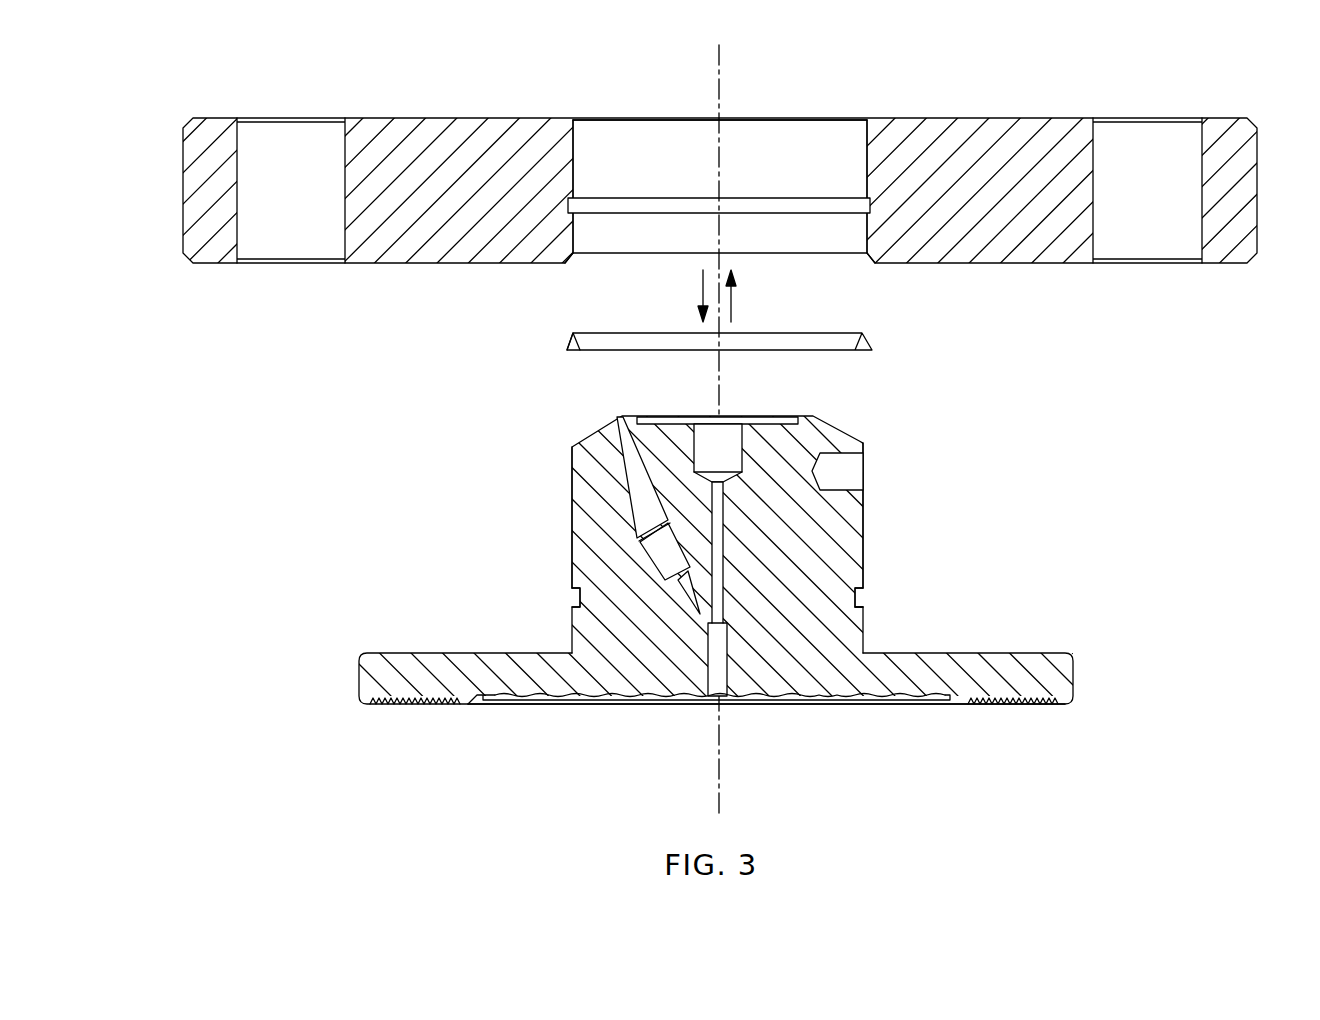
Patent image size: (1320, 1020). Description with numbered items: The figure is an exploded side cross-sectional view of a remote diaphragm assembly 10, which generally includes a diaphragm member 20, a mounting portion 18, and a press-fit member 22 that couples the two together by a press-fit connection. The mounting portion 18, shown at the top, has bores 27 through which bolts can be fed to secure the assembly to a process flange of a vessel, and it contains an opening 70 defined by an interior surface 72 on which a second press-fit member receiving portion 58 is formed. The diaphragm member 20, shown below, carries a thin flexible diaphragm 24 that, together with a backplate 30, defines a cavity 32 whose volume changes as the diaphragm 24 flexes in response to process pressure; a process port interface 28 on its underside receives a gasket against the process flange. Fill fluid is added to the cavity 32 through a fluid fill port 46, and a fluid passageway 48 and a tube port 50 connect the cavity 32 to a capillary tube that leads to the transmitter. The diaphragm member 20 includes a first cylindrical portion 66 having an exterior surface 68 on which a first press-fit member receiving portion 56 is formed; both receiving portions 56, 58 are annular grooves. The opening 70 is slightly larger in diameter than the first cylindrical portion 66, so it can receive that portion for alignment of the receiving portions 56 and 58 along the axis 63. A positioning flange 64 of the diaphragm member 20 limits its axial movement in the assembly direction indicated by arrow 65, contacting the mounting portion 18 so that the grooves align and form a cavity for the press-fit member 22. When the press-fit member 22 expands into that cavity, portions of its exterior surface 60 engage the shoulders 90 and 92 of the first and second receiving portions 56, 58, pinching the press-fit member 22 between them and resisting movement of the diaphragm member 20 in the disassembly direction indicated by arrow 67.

The remote diaphragm assembly 10 is at (950, 69).
The mounting portion 18 is at (1076, 104).
The diaphragm member 20 is at (924, 413).
The press-fit member 22 is at (870, 334).
The diaphragm 24 is at (843, 704).
The bores 27 is at (287, 145).
The process port interface 28 is at (413, 704).
The backplate 30 is at (600, 698).
The cavity 32 is at (680, 698).
The fluid fill port 46 is at (597, 447).
The fluid passageway 48 is at (722, 497).
The tube port 50 is at (707, 432).
The first press-fit member receiving portion 56 is at (572, 597).
The second press-fit member receiving portion 58 is at (757, 205).
The exterior surface 60 is at (573, 336).
The axis 63 is at (728, 45).
The positioning flange 64 is at (365, 655).
The assembly direction arrow 65 is at (733, 301).
The first cylindrical portion 66 is at (862, 511).
The disassembly direction arrow 67 is at (700, 291).
The exterior surface 68 is at (570, 522).
The opening 70 is at (808, 106).
The interior surface 72 is at (576, 140).
The shoulder 90 is at (608, 200).
The shoulder 92 is at (860, 601).